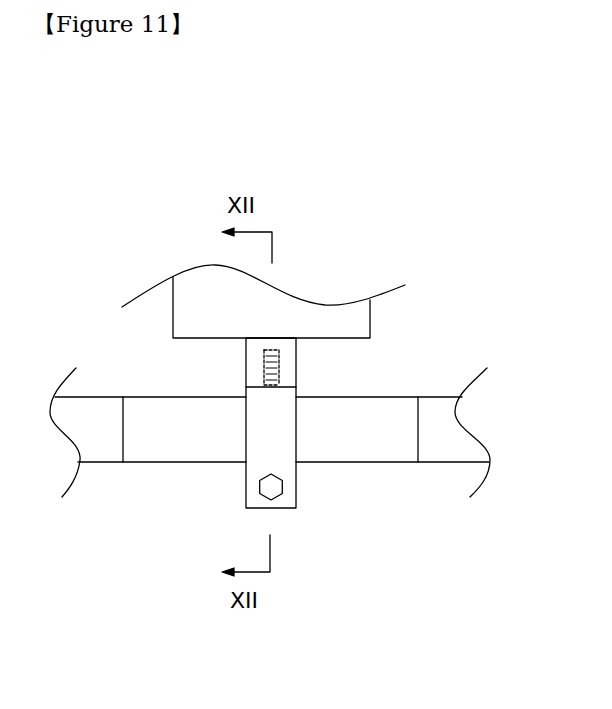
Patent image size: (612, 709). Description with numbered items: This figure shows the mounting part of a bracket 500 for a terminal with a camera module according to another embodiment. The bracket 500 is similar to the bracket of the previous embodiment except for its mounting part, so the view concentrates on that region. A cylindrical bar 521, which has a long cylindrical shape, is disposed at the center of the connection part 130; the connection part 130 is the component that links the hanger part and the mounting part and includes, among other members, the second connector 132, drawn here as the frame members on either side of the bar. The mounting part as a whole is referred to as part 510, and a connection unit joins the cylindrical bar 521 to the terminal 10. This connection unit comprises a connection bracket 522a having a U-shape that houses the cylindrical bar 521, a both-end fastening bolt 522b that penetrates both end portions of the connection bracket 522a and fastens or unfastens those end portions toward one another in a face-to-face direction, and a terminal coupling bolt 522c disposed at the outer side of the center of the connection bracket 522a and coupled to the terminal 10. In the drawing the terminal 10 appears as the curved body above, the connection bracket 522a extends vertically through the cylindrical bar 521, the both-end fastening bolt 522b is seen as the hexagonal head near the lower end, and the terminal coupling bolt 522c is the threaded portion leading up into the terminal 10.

The terminal 10 is at (183, 310).
The bracket for the terminal with the camera module 500 is at (400, 245).
The rail assembly 510 is at (270, 503).
The cylindrical bar 521 is at (184, 467).
The connection part 130 is at (281, 495).
The second connector 132 is at (101, 448).
The connection bracket 522a is at (296, 437).
The both-end fastening bolt 522b is at (282, 497).
The terminal coupling bolt 522c is at (278, 372).